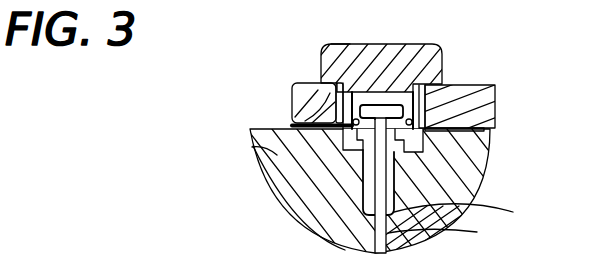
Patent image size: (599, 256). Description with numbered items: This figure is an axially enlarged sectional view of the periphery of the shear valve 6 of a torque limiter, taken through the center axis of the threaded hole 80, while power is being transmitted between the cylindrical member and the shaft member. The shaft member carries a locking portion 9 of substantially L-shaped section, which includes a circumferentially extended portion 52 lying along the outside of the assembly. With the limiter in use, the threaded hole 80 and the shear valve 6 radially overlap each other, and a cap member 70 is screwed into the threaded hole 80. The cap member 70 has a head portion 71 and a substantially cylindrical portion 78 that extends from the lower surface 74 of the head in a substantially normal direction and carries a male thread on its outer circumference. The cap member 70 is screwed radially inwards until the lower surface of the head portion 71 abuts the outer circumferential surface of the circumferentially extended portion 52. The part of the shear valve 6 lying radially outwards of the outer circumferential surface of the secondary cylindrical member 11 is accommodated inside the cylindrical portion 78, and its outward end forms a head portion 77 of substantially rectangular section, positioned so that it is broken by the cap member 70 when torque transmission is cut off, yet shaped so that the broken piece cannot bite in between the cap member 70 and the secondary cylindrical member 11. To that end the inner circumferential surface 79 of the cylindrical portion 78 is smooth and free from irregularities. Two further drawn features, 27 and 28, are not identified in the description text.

The shear valve 6 is at (356, 137).
The locking portion 9 is at (496, 86).
The secondary cylindrical member 11 is at (252, 147).
The intermediate layer 27 is at (446, 230).
The bottom layer 28 is at (445, 234).
The circumferentially extended portion 52 is at (304, 92).
The cap member 70 is at (443, 58).
The head portion 71 is at (348, 43).
The lower surface 74 is at (294, 107).
The head portion 77 is at (430, 141).
The cylindrical portion 78 is at (472, 111).
The inner circumferential surface 79 is at (342, 152).
The threaded hole 80 is at (310, 121).